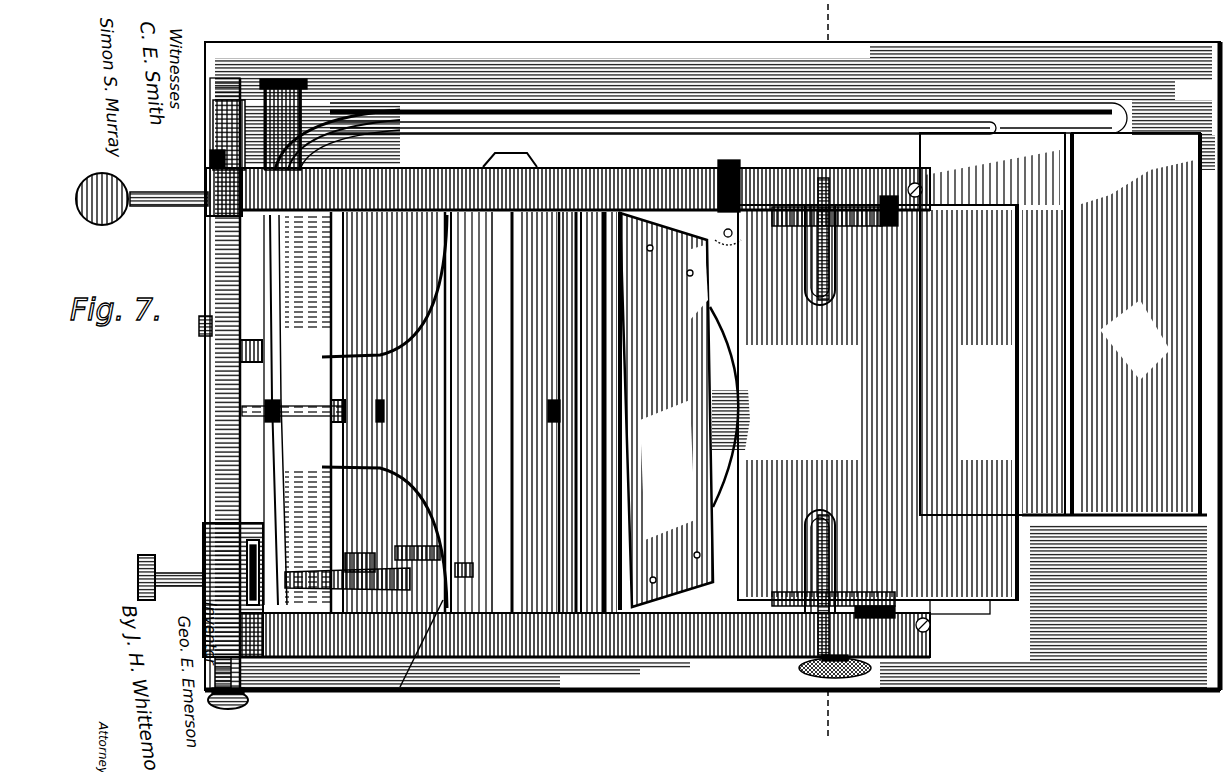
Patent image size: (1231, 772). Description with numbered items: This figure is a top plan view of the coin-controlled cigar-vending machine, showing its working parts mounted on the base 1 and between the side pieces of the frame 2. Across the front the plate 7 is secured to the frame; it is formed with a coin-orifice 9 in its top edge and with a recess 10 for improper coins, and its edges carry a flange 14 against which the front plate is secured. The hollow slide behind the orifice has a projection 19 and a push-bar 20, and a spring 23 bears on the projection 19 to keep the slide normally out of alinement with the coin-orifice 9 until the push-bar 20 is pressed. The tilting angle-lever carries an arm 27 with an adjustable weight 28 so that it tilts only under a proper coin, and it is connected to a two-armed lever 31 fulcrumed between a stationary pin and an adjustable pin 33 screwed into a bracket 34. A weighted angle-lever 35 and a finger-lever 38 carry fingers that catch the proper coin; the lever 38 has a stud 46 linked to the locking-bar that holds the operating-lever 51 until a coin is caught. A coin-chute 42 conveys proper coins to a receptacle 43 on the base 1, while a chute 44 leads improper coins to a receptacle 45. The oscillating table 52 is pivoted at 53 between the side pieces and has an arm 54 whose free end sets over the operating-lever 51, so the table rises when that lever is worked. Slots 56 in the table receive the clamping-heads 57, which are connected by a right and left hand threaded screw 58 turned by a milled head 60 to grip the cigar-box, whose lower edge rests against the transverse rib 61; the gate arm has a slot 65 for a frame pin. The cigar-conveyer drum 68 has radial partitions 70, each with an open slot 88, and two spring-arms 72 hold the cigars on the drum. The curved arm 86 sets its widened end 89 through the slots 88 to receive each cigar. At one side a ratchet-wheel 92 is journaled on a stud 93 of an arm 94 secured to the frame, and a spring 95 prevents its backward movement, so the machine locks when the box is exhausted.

The base 1 is at (1110, 600).
The frame 2 is at (585, 412).
The plate 7 is at (238, 407).
The coin-orifice 9 is at (220, 552).
The recess 10 is at (138, 579).
The flange 14 is at (842, 380).
The projection 19 is at (262, 560).
The push-bar 20 is at (165, 596).
The spring 23 is at (278, 445).
The arm 27 is at (215, 668).
The adjustable weight 28 is at (230, 710).
The two-armed lever 31 is at (102, 199).
The adjustable pin 33 is at (199, 326).
The bracket 34 is at (205, 351).
The angle-lever 35 is at (210, 180).
The lever 38 is at (228, 128).
The coin-chute 42 is at (1045, 108).
The receptacle 43 is at (1114, 324).
The chute 44 is at (283, 124).
The receptacle 45 is at (992, 324).
The stud 46 is at (270, 88).
The operating-lever 51 is at (175, 206).
The oscillating table 52 is at (864, 402).
The pivot 53 is at (960, 619).
The arm 54 is at (510, 156).
The slots 56 is at (835, 265).
The clamping-heads 57 is at (790, 226).
The right and left hand threaded screw 58 is at (815, 295).
The milled head 60 is at (820, 680).
The transverse rib 61 is at (666, 411).
The slot 65 is at (590, 250).
The cigar-conveyer drum 68 is at (531, 412).
The radial partitions 70 is at (444, 412).
The spring-arms 72 is at (384, 411).
The curved arm 86 is at (302, 408).
The open slot 88 is at (588, 411).
The widened end 89 is at (333, 420).
The ratchet-wheel 92 is at (417, 553).
The stud 93 is at (345, 563).
The arm 94 is at (419, 664).
The spring 95 is at (347, 581).